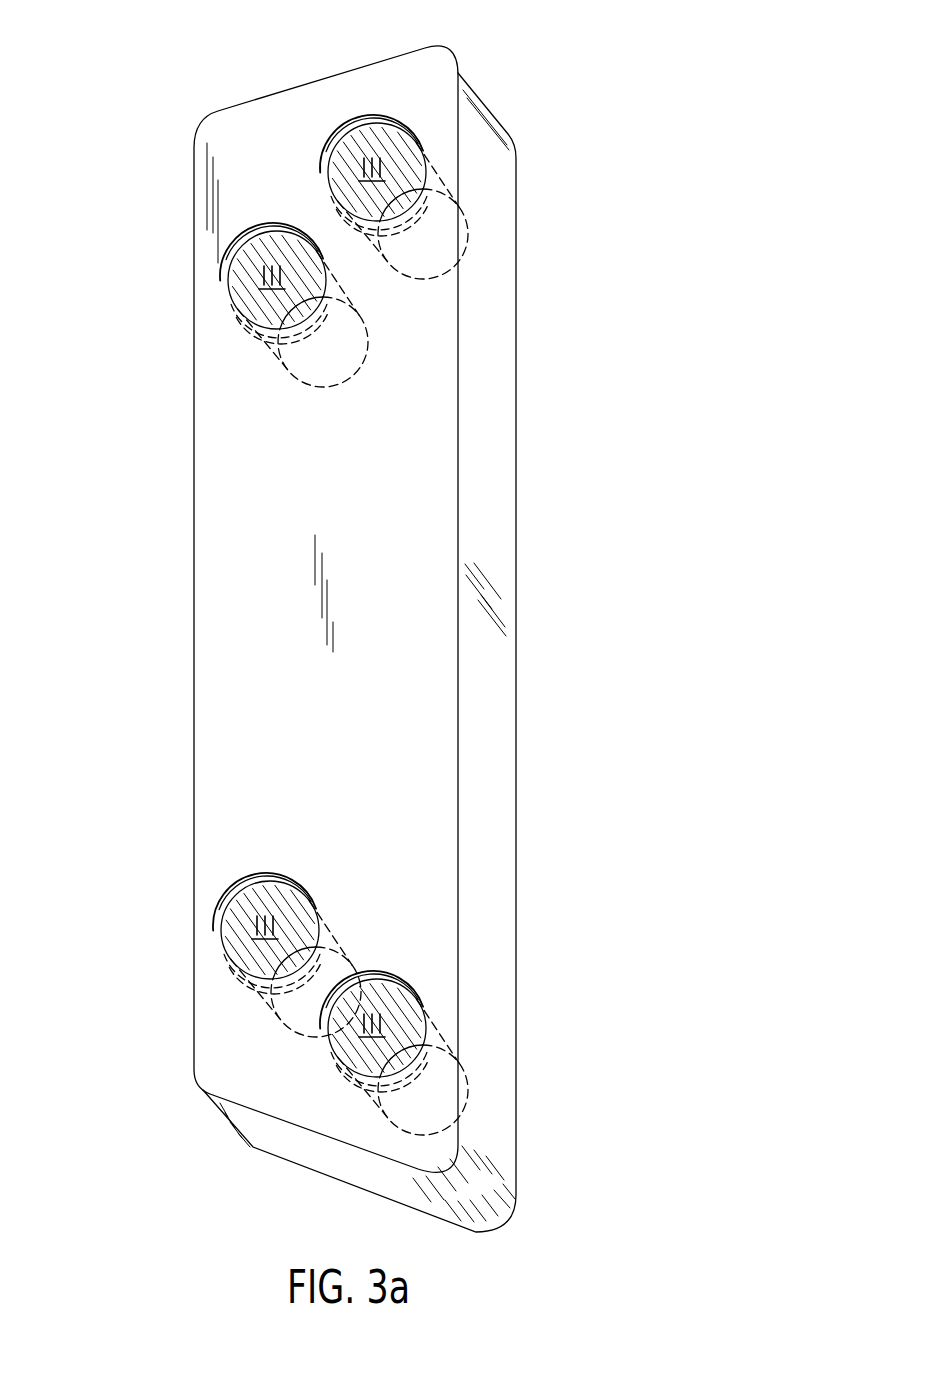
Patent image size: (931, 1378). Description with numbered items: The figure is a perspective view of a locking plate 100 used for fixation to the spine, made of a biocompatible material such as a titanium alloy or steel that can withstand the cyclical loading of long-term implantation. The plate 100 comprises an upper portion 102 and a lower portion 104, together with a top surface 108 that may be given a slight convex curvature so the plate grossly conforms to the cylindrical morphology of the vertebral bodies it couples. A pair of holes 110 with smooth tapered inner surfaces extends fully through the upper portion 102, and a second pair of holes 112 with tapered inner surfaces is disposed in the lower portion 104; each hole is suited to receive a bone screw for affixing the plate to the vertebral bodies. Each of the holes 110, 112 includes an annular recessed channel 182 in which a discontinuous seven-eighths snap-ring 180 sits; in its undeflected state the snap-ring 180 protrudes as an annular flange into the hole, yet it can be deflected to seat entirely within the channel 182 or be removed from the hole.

The plate 100 is at (356, 516).
The upper portion 102 is at (545, 179).
The lower portion 104 is at (148, 867).
The top surface 108 is at (445, 430).
The pair of holes 110 is at (268, 227).
The second pair of holes 112 is at (380, 970).
The snap-ring 180 is at (230, 296).
The annular recessed channel 182 is at (430, 186).